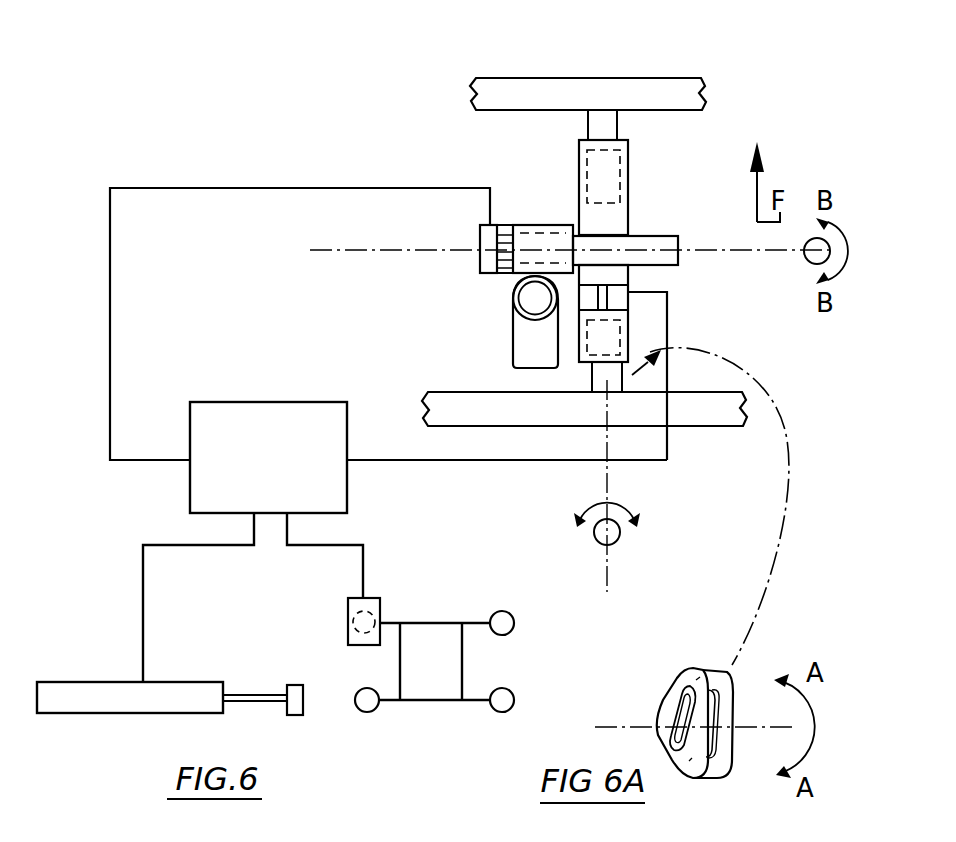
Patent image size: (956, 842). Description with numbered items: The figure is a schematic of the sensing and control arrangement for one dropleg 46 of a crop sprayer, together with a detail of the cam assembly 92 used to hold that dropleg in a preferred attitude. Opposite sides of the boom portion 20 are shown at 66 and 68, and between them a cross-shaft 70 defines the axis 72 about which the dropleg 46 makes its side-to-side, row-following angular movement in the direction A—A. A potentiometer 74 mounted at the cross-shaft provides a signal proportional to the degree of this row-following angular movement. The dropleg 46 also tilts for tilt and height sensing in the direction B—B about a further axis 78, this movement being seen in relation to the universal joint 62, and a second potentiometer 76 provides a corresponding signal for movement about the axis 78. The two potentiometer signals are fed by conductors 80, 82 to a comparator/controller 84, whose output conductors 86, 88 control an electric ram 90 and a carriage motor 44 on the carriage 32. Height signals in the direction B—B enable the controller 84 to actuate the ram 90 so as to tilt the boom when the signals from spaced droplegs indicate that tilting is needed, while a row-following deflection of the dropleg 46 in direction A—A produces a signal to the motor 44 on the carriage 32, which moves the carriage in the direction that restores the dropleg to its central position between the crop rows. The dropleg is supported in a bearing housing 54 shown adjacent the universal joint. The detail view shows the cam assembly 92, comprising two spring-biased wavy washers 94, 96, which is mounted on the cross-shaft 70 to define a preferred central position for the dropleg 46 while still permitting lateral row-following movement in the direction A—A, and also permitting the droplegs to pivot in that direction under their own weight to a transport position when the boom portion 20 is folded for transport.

In FIG. 6, the boom portion 20 is at (699, 67).
In FIG. 6, the carriage 32 is at (440, 706).
In FIG. 6, the carriage motor 44 is at (348, 620).
In FIG. 6, the dropleg 46 is at (513, 301).
In FIG. 6, the bearing housing 54 is at (527, 343).
In FIG. 6, the universal joint 62 is at (557, 213).
In FIG. 6, the boom portion side 66 is at (492, 92).
In FIG. 6, the boom portion side 68 is at (546, 416).
In FIG. 6, the cross-shaft 70 is at (597, 125).
In FIG. 6, the axis 72 is at (607, 579).
In FIG. 6, the potentiometer 74 is at (621, 285).
In FIG. 6, the potentiometer 76 is at (492, 270).
In FIG. 6, the axis 78 is at (737, 245).
In FIG. 6, the conductor 80 is at (208, 188).
In FIG. 6, the conductor 82 is at (363, 460).
In FIG. 6, the comparator/controller 84 is at (213, 402).
In FIG. 6, the output conductor 86 is at (143, 562).
In FIG. 6, the output conductor 88 is at (365, 567).
In FIG. 6, the electric ram 90 is at (118, 705).
In FIG. 6A, the cam assembly 92 is at (763, 614).
In FIG. 6A, the wavy washer 94 is at (665, 705).
In FIG. 6A, the wavy washer 96 is at (728, 683).